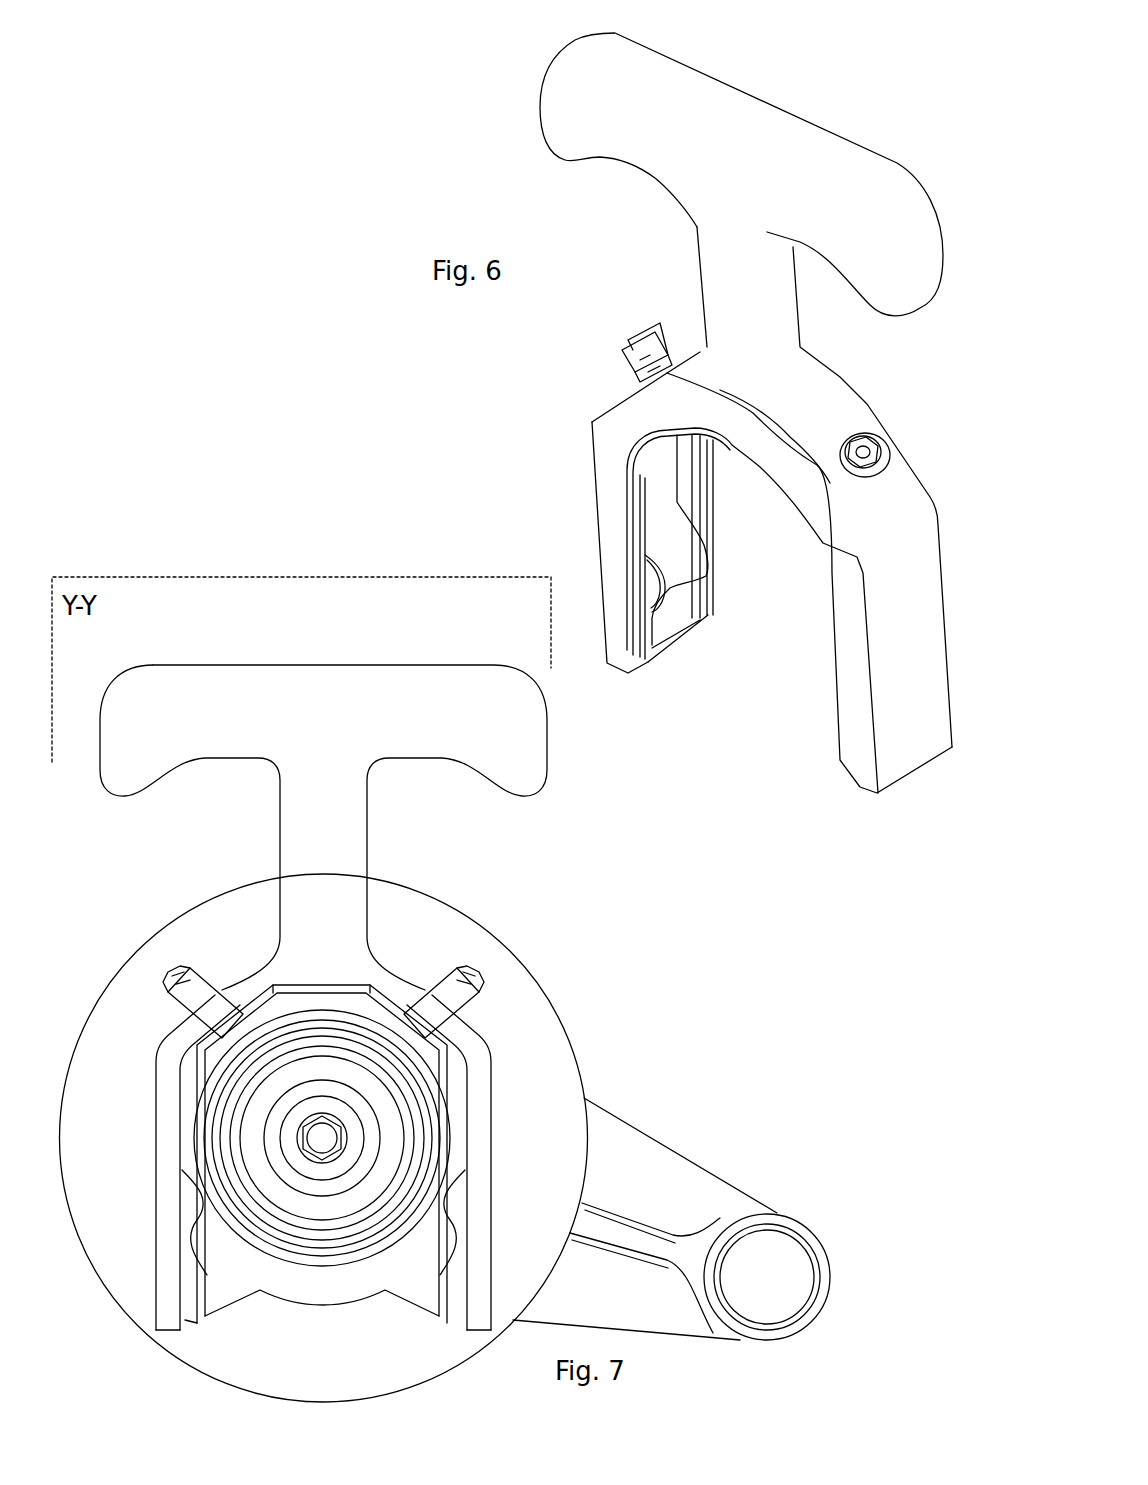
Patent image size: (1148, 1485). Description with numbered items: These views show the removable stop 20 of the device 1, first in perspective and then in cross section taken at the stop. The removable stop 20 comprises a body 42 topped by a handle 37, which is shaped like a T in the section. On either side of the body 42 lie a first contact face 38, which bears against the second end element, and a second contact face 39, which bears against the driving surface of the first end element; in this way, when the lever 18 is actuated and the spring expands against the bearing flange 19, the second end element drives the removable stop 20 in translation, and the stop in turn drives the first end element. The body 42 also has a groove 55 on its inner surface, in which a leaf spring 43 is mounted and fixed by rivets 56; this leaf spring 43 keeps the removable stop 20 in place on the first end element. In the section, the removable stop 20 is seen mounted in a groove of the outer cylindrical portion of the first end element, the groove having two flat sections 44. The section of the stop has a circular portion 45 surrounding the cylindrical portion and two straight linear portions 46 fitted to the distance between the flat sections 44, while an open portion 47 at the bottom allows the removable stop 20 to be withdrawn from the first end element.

In FIG. 7, the device 1 is at (558, 891).
In FIG. 7, the lever 18 is at (705, 1185).
In FIG. 7, the bearing flange 19 is at (550, 1270).
In FIG. 6, the removable stop 20 is at (517, 158).
In FIG. 7, the removable stop 20 is at (281, 856).
In FIG. 6, the handle 37 is at (790, 128).
In FIG. 7, the handle 37 is at (253, 673).
In FIG. 6, the first contact face 38 is at (605, 572).
In FIG. 6, the second contact face 39 is at (712, 510).
In FIG. 6, the body 42 is at (595, 418).
In FIG. 7, the body 42 is at (165, 1270).
In FIG. 6, the leaf spring 43 is at (670, 598).
In FIG. 7, the leaf spring 43 is at (495, 1190).
In FIG. 7, the flat sections 44 is at (195, 1120).
In FIG. 6, the circular portion 45 is at (800, 515).
In FIG. 7, the circular portion 45 is at (375, 1020).
In FIG. 6, the straight linear portions 46 is at (720, 603).
In FIG. 7, the straight linear portions 46 is at (175, 1175).
In FIG. 6, the open portion 47 is at (738, 683).
In FIG. 7, the open portion 47 is at (325, 1322).
In FIG. 6, the groove 55 is at (685, 490).
In FIG. 7, the groove 55 is at (195, 1298).
In FIG. 6, the rivets 56 is at (640, 325).
In FIG. 7, the rivets 56 is at (172, 972).